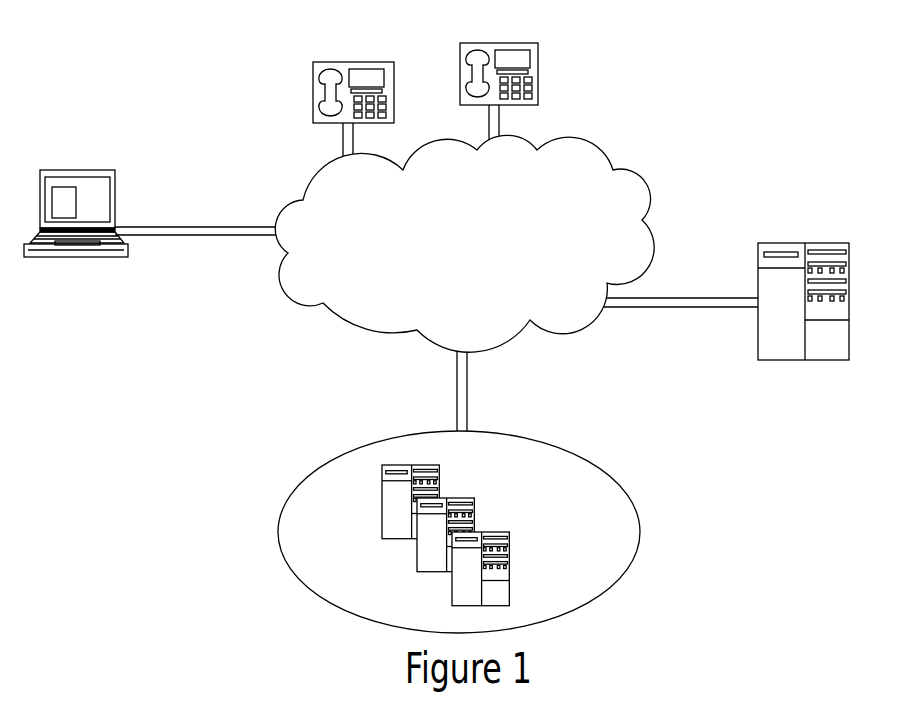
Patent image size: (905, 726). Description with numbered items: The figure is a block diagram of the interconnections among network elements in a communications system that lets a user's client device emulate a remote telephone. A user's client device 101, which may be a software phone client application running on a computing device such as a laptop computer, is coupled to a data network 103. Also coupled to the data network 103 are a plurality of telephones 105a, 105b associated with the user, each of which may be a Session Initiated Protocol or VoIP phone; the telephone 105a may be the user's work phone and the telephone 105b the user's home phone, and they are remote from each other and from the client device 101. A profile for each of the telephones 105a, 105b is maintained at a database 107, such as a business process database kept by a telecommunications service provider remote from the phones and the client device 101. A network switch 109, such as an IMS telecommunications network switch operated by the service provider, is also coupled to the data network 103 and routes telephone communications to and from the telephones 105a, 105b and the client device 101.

The client device 101 is at (80, 170).
The data network 103 is at (590, 135).
The telephone 105a is at (502, 43).
The telephone 105b is at (358, 62).
The database 107 is at (802, 243).
The network switch 109 is at (553, 443).